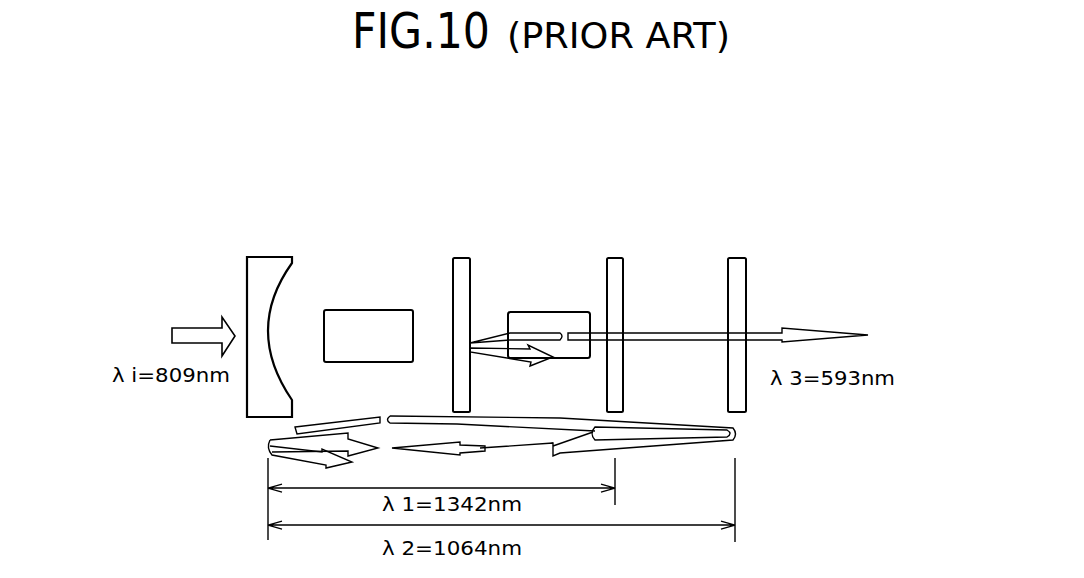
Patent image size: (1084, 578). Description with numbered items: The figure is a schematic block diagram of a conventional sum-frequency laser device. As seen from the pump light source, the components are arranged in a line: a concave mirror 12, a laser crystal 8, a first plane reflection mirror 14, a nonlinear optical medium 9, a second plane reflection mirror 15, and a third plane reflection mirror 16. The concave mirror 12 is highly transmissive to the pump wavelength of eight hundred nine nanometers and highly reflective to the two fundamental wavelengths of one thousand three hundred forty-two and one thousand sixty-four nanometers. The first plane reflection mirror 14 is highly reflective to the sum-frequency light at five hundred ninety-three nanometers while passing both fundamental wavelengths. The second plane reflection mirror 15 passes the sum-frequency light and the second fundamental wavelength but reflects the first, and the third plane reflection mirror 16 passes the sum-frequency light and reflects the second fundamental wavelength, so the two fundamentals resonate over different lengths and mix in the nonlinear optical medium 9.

The laser crystal 8 is at (413, 310).
The nonlinear optical medium 9 is at (583, 312).
The concave mirror 12 is at (268, 257).
The first plane reflection mirror 14 is at (458, 258).
The second plane reflection mirror 15 is at (614, 258).
The third plane reflection mirror 16 is at (736, 258).